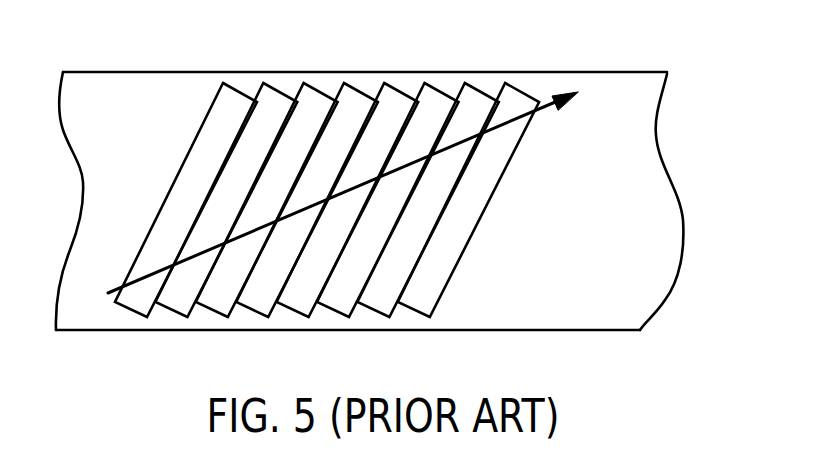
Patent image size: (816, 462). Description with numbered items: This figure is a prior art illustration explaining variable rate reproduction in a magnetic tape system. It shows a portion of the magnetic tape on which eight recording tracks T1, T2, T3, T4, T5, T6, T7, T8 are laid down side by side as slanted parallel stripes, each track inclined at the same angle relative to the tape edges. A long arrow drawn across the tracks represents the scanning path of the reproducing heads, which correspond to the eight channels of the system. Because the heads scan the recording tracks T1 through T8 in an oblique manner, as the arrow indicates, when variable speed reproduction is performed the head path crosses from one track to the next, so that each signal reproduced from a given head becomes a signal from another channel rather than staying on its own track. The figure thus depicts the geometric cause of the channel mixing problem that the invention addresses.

The recording track T1 is at (238, 85).
The recording track T2 is at (281, 85).
The recording track T3 is at (323, 85).
The recording track T4 is at (367, 85).
The recording track T5 is at (408, 85).
The recording track T6 is at (450, 85).
The recording track T7 is at (494, 85).
The recording track T8 is at (537, 85).